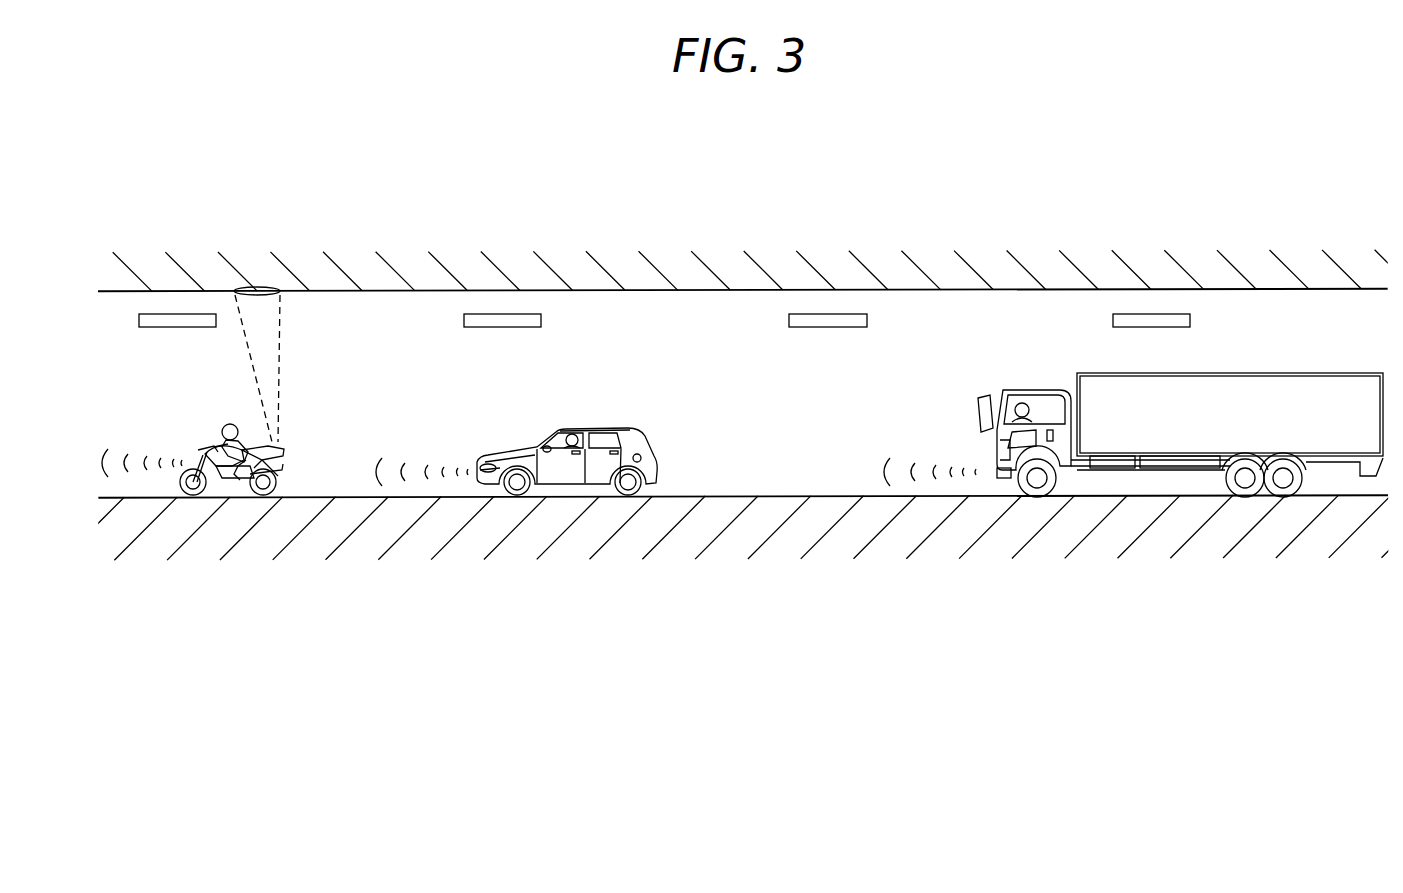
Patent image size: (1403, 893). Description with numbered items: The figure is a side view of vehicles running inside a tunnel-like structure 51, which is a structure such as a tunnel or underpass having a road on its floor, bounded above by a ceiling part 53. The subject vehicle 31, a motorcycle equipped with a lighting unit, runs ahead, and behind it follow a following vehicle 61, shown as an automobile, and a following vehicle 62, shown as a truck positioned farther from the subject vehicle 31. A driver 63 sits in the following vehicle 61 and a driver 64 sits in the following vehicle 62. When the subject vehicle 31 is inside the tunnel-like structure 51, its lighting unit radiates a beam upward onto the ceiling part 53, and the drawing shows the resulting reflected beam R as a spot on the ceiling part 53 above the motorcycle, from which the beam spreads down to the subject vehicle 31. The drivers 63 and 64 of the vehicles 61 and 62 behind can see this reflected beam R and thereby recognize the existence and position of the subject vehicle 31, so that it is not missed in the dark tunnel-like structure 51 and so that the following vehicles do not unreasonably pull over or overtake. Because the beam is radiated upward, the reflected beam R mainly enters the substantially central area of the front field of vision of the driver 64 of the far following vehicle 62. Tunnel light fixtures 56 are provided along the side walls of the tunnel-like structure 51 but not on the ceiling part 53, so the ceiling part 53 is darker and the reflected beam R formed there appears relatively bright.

The subject vehicle 31 is at (206, 446).
The tunnel-like structure 51 is at (696, 365).
The ceiling part 53 is at (330, 292).
The tunnel light fixtures 56 is at (139, 320).
The following vehicle 61 is at (601, 428).
The following vehicle 62 is at (1228, 373).
The driver 63 is at (578, 436).
The driver 64 is at (1022, 402).
The reflected beam R is at (257, 288).